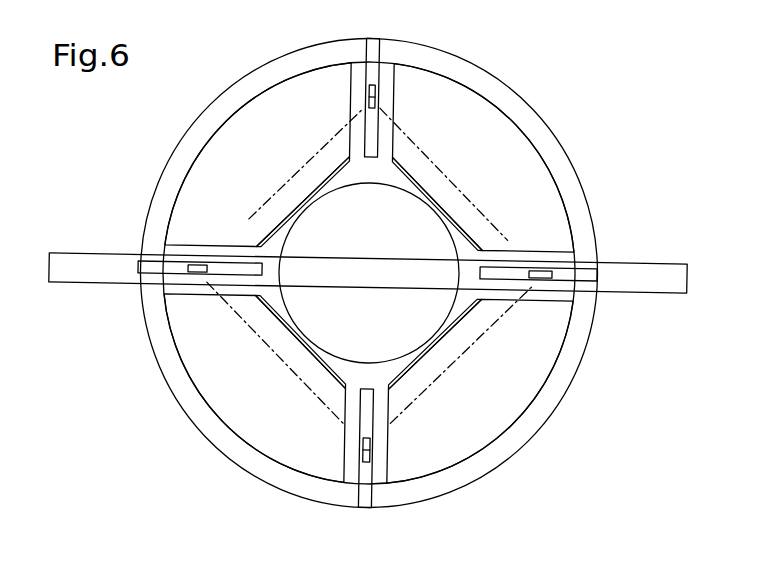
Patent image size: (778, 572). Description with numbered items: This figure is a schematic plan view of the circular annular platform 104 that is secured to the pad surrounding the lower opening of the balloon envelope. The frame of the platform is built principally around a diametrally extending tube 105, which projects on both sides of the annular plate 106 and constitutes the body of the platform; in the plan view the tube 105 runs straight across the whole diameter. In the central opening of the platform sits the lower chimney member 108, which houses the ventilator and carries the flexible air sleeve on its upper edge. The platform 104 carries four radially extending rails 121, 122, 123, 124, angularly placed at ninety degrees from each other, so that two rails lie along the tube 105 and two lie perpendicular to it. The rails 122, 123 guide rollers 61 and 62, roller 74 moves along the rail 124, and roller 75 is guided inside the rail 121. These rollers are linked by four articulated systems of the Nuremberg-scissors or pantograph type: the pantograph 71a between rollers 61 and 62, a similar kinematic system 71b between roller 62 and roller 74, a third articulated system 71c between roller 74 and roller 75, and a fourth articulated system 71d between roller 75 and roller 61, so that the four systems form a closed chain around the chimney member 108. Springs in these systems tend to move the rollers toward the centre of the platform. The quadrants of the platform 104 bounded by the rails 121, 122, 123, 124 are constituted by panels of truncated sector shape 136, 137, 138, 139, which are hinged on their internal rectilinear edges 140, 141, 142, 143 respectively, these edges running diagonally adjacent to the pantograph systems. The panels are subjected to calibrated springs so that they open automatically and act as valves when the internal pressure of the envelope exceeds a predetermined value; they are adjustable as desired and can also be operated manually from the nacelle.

The circular annular platform 104 is at (572, 145).
The diametrally extending tube 105 is at (77, 268).
The annular plate 106 is at (521, 102).
The lower chimney member 108 is at (347, 184).
The rail 121 is at (372, 70).
The rail 124 is at (365, 487).
The rail 122 is at (214, 266).
The rail 123 is at (566, 276).
The roller 61 is at (197, 278).
The roller 62 is at (374, 452).
The roller 74 is at (548, 280).
The roller 75 is at (377, 96).
The panel with truncated sector shape 136 is at (284, 144).
The panel with truncated sector shape 137 is at (489, 147).
The panel with truncated sector shape 138 is at (299, 430).
The panel with truncated sector shape 139 is at (459, 434).
The internal rectilinear edge 140 is at (307, 195).
The internal rectilinear edge 141 is at (456, 217).
The internal rectilinear edge 142 is at (283, 337).
The internal rectilinear edge 143 is at (466, 318).
The pantograph 71a is at (283, 361).
The kinematic system 71b is at (462, 356).
The articulated system 71c is at (491, 223).
The articulated system 71d is at (255, 212).